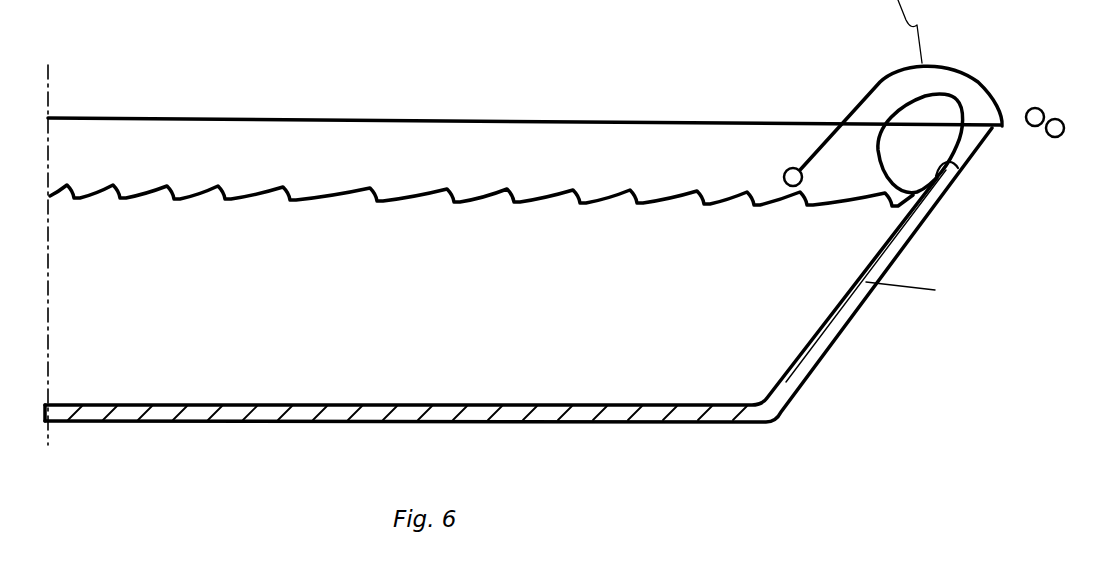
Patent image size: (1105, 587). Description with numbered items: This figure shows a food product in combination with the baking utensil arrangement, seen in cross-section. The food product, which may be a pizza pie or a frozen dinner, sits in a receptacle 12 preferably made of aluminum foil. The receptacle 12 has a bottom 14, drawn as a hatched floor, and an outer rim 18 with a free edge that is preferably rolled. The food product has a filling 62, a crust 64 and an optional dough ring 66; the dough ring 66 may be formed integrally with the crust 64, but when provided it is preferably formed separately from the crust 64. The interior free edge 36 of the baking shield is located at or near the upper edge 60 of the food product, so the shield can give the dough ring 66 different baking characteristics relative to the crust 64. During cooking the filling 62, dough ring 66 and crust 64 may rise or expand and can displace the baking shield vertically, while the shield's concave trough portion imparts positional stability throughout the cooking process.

The receptacle 12 is at (780, 412).
The bottom 14 is at (645, 425).
The outer rim 18 is at (1023, 133).
The interior free edge 36 is at (786, 172).
The upper edge 60 is at (562, 190).
The filling 62 is at (802, 305).
The crust 64 is at (935, 290).
The dough ring 66 is at (933, 118).